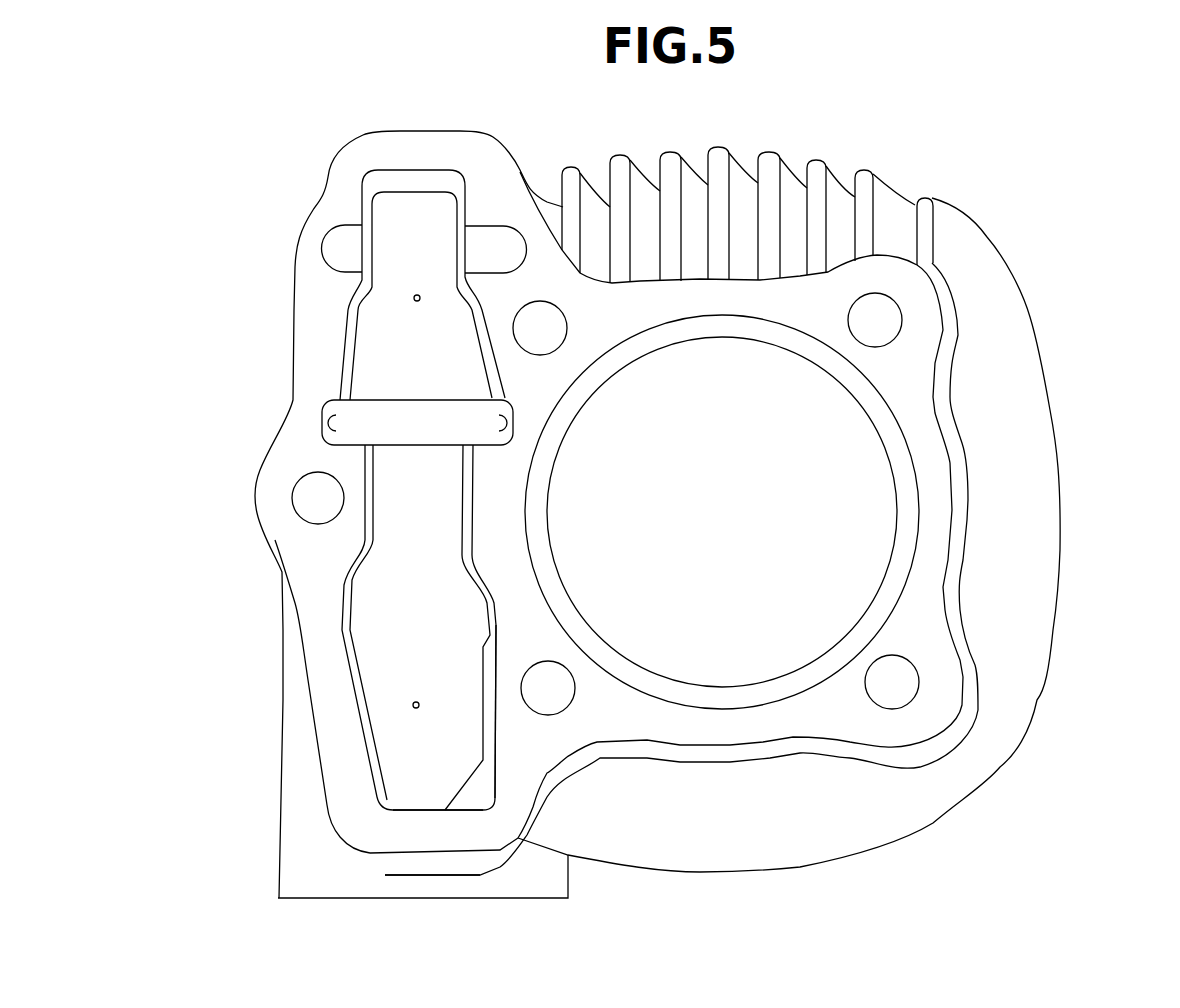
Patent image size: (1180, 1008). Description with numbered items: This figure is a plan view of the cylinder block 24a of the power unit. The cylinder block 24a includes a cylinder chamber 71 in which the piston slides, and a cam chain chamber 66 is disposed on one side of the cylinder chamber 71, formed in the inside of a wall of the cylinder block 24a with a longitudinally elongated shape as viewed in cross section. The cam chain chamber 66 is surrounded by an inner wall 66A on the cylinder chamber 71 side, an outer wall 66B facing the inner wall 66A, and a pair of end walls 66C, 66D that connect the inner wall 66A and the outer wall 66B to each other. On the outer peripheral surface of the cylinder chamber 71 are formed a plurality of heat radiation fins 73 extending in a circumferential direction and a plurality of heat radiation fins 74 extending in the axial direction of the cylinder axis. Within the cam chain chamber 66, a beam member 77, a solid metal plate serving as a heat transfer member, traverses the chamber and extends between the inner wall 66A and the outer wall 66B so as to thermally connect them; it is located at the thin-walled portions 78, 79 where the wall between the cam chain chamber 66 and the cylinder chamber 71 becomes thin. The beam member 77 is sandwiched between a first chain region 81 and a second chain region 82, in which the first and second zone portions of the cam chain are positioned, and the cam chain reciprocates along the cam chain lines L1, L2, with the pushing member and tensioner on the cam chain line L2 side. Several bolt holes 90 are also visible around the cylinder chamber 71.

The cylinder block 24a is at (1087, 367).
The heat radiation fins 74 is at (862, 172).
The cylinder chamber 71 is at (742, 512).
The heat radiation fins 73 is at (1005, 690).
The bolt holes 90 is at (290, 538).
The cam chain chamber 66 is at (432, 548).
The inner wall 66A is at (500, 513).
The outer wall 66B is at (313, 600).
The end wall 66C is at (392, 159).
The end wall 66D is at (400, 835).
The beam member 77 is at (400, 420).
The portion having a thin wall thickness 78 is at (325, 420).
The portion having a thin wall thickness 79 is at (505, 432).
The first chain region 81 is at (400, 330).
The second chain region 82 is at (378, 658).
The cam chain line L1 is at (414, 297).
The cam chain line L2 is at (413, 705).